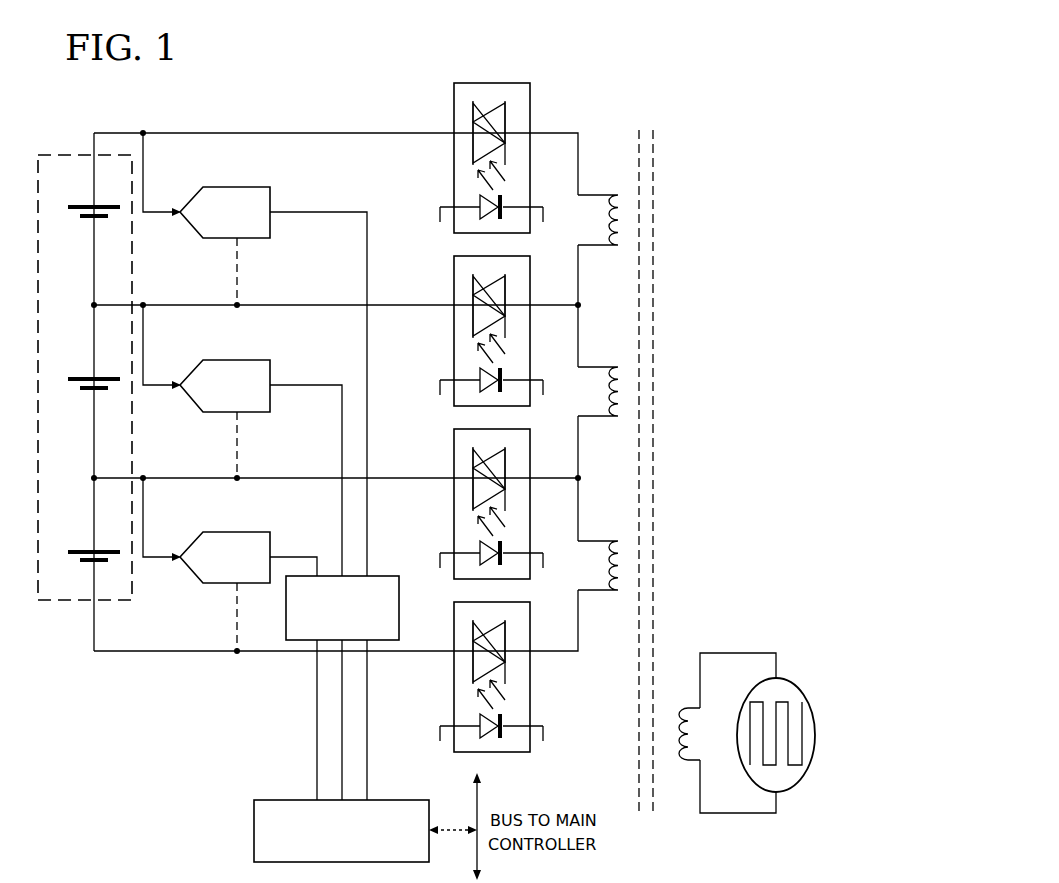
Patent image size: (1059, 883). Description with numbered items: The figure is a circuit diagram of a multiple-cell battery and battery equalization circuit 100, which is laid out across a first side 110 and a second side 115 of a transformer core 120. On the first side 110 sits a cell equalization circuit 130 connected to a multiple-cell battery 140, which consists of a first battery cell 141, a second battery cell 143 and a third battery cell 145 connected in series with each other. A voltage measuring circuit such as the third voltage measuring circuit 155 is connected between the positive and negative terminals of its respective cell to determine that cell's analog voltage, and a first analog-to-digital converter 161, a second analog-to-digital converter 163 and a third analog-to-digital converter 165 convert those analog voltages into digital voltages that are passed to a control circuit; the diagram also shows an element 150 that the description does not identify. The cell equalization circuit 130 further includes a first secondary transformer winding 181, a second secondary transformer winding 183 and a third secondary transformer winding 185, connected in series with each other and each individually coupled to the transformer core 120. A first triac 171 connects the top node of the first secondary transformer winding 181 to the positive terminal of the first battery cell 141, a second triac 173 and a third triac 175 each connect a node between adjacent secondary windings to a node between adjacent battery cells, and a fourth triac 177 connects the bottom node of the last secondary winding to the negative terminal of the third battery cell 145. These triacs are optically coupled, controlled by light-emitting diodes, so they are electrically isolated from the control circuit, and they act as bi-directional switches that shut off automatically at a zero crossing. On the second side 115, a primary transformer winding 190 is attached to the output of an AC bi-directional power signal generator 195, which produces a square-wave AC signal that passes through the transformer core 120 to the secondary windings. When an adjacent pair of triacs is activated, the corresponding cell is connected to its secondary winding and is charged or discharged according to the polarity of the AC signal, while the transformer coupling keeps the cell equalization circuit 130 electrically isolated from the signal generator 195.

The multiple-cell battery and battery equalization circuit 100 is at (660, 68).
The first side 110 is at (626, 121).
The second side 115 is at (702, 121).
The transformer core 120 is at (655, 289).
The cell equalization circuit 130 is at (260, 108).
The multiple-cell battery 140 is at (76, 155).
The first battery cell 141 is at (77, 204).
The second battery cell 143 is at (76, 376).
The third battery cell 145 is at (76, 548).
The isolation element 150 is at (380, 576).
The third voltage measuring circuit 155 is at (268, 800).
The first analog-to-digital converter 161 is at (248, 187).
The second analog-to-digital converter 163 is at (248, 360).
The third analog-to-digital converter 165 is at (248, 532).
The first triac 171 is at (452, 108).
The second triac 173 is at (452, 282).
The third triac 175 is at (452, 455).
The fourth triac 177 is at (452, 628).
The first secondary transformer winding 181 is at (604, 190).
The second secondary transformer winding 183 is at (604, 363).
The third secondary transformer winding 185 is at (604, 538).
The primary transformer winding 190 is at (678, 708).
The AC bi-directional power signal generator 195 is at (791, 683).